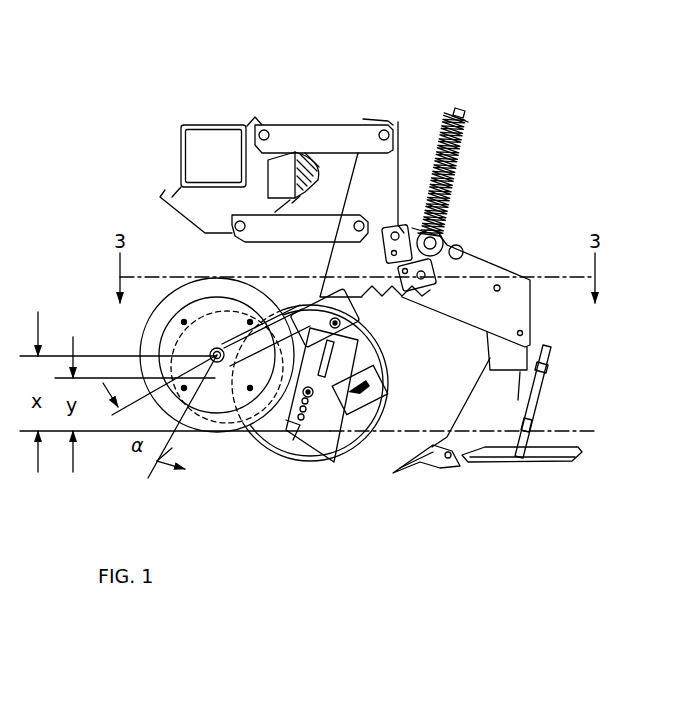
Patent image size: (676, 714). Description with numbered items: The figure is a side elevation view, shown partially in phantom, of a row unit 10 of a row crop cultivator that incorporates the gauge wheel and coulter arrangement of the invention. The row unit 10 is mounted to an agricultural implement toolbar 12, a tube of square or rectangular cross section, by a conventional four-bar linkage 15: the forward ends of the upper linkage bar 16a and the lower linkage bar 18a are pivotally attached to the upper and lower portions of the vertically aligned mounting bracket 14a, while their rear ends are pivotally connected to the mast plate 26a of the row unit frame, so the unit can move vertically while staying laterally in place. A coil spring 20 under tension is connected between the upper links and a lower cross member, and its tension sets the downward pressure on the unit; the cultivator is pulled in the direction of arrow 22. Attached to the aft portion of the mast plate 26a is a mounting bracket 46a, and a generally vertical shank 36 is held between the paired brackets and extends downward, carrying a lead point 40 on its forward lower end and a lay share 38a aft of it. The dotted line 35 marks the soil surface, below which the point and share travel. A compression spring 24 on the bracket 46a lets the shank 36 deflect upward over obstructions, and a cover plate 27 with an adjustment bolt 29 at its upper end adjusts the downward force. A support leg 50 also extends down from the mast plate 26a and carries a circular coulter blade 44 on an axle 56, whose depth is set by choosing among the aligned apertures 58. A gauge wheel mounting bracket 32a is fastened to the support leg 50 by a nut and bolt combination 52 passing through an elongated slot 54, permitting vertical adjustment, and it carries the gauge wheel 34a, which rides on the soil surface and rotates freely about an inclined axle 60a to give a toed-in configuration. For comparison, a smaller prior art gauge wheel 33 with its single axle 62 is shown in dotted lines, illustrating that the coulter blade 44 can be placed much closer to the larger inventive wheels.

The row unit 10 is at (484, 158).
The toolbar 12 is at (181, 125).
The first vertically aligned mounting bracket 14a is at (165, 190).
The left four-bar linkage 15 is at (323, 238).
The left upper linkage bar 16a is at (326, 134).
The left lower linkage bar 18a is at (280, 232).
The coil spring 20 is at (297, 158).
The arrow 22 is at (235, 60).
The compression spring 24 is at (448, 113).
The first mast plate 26a is at (388, 173).
The cover plate 27 is at (472, 133).
The adjustment bolt 29 is at (466, 118).
The gauge wheel mounting bracket 32a is at (356, 320).
The prior art gauge wheel 33 is at (182, 347).
The first gauge wheel 34a is at (188, 279).
The soil surface 35 is at (384, 389).
The shank 36 is at (479, 389).
The first lay share 38a is at (497, 462).
The lead point 40 is at (427, 403).
The coulter blade 44 is at (314, 395).
The first mounting bracket 46a is at (472, 250).
The support leg 50 is at (336, 404).
The nut and bolt combination 52 is at (343, 333).
The elongated slot 54 is at (340, 357).
The axle 56 is at (307, 398).
The aligned apertures 58 is at (303, 406).
The first axle 60a is at (214, 362).
The axle of prior art gauge wheel 62 is at (248, 442).